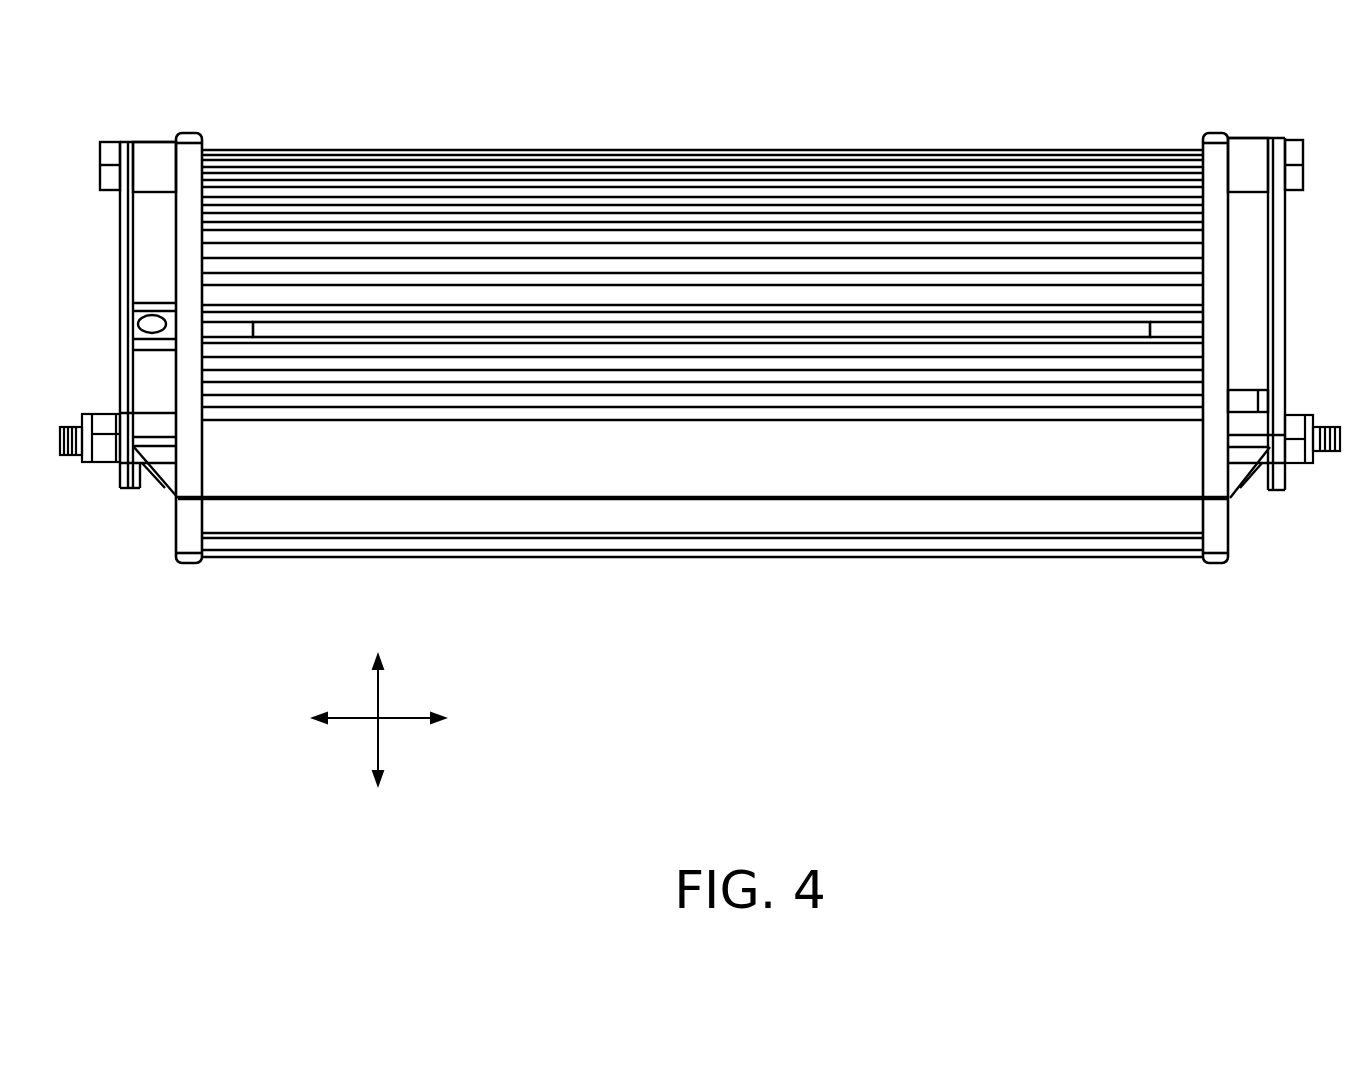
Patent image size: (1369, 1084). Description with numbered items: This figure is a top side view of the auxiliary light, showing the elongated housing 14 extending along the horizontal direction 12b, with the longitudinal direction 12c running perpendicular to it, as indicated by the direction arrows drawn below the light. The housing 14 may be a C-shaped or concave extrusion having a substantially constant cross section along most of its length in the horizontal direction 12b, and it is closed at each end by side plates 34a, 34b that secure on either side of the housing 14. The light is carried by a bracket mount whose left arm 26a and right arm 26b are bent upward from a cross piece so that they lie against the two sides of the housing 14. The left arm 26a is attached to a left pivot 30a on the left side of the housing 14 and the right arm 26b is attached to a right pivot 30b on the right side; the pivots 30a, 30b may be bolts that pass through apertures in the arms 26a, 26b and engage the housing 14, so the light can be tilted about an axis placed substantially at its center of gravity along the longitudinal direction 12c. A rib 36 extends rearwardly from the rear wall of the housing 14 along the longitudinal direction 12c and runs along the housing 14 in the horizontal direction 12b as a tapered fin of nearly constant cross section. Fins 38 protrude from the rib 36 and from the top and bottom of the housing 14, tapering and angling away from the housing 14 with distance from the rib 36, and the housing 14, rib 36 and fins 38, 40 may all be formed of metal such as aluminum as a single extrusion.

The housing 14 is at (790, 452).
The left arm 26a is at (1276, 249).
The right arm 26b is at (128, 249).
The left pivot 30a is at (1323, 454).
The right pivot 30b is at (70, 456).
The side plate 34a is at (1216, 263).
The side plate 34b is at (187, 263).
The rib 36 is at (766, 300).
The fins 38 is at (278, 318).
The fins 40 is at (263, 352).
The horizontal direction 12b is at (352, 716).
The longitudinal direction 12c is at (373, 741).